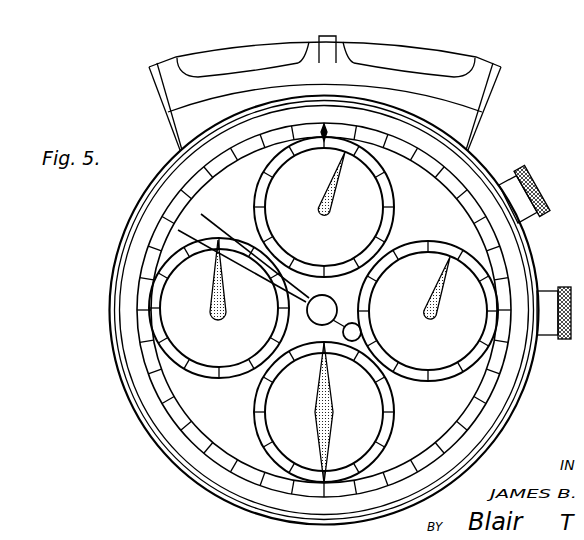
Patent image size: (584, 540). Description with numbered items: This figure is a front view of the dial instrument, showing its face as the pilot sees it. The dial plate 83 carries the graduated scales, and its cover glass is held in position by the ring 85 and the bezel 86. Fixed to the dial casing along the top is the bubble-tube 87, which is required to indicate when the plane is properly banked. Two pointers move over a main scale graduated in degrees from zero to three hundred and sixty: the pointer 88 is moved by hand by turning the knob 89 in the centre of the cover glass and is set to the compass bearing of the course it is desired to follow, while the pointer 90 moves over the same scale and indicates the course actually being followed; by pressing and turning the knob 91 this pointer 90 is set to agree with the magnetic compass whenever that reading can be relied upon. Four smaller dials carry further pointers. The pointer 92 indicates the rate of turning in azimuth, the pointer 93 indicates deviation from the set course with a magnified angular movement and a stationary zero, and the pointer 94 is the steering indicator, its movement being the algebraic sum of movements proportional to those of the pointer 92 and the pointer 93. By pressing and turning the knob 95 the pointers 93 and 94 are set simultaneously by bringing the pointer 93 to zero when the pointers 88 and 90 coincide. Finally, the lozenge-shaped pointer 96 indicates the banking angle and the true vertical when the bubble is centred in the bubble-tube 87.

The dial plate 83 is at (468, 384).
The ring 85 is at (493, 438).
The bezel 86 is at (458, 467).
The bubble-tube 87 is at (397, 55).
The pointer 88 is at (178, 230).
The knob 89 is at (312, 319).
The pointer 90 is at (255, 249).
The knob 91 is at (547, 187).
The pointer 92 is at (211, 283).
The pointer 93 is at (432, 285).
The pointer 94 is at (330, 181).
The knob 95 is at (571, 313).
The pointer 96 is at (316, 387).